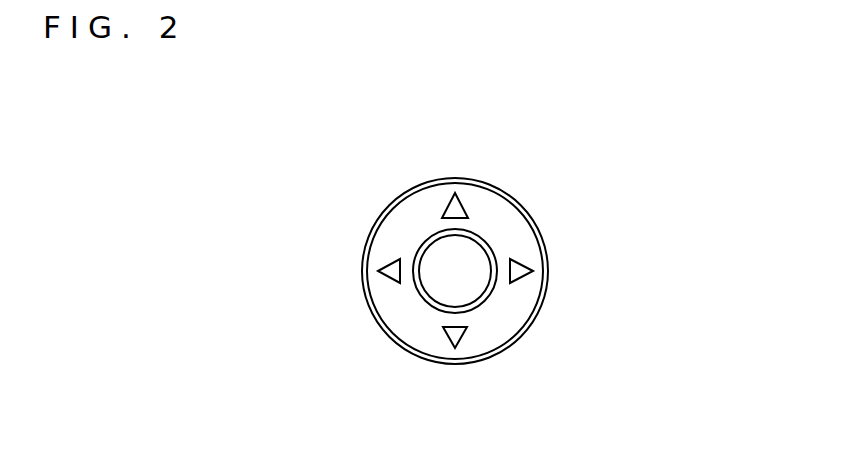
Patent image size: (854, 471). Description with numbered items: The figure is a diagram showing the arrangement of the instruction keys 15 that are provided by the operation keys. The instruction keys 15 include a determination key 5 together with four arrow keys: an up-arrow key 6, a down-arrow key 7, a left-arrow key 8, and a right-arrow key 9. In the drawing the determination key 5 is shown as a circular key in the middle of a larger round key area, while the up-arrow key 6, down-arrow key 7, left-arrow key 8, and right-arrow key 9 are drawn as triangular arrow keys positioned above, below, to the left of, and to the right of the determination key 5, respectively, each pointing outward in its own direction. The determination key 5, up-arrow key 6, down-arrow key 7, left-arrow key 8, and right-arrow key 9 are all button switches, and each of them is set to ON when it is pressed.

The instruction keys 15 is at (343, 133).
The determination key 5 is at (468, 257).
The up-arrow key 6 is at (455, 205).
The down-arrow key 7 is at (458, 340).
The left-arrow key 8 is at (390, 268).
The right-arrow key 9 is at (523, 270).